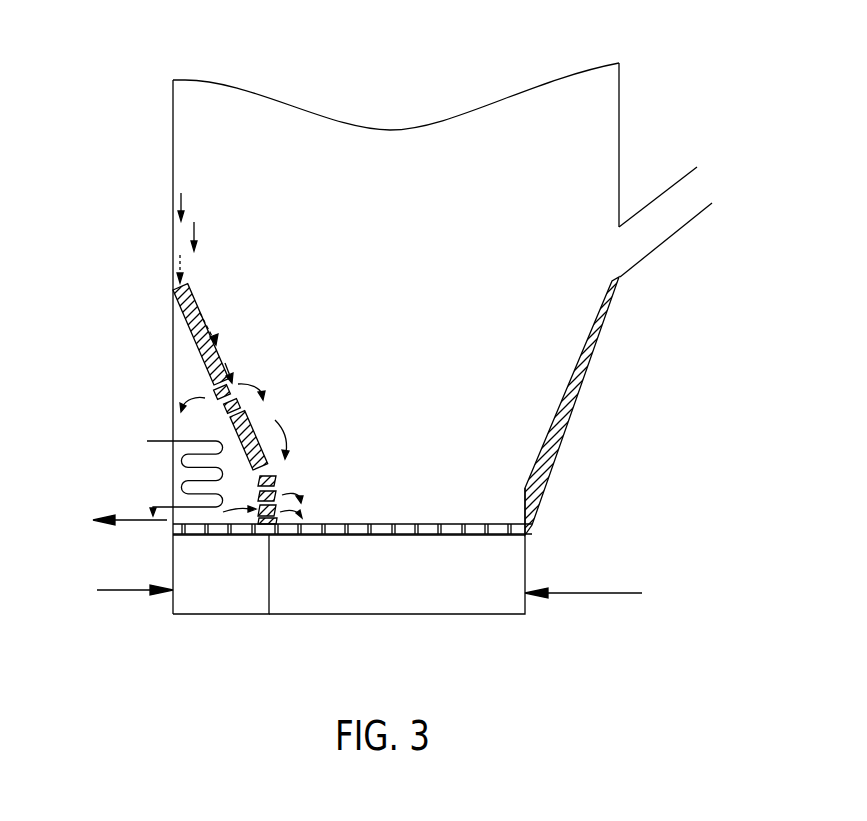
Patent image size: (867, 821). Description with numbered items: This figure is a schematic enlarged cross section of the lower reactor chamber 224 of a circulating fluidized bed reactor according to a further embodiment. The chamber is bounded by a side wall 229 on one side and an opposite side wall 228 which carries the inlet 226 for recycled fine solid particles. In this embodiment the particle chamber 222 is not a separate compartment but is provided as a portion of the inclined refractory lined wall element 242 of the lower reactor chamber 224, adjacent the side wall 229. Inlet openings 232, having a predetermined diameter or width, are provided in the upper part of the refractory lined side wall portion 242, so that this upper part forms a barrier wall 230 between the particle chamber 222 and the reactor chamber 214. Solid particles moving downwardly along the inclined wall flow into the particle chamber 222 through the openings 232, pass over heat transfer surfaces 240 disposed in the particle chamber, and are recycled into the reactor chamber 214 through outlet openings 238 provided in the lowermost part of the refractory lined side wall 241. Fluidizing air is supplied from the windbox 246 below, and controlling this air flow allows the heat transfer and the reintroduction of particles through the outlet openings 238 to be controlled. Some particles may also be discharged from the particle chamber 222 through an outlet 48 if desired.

The lower reactor chamber 224 is at (416, 92).
The side wall 228 is at (620, 110).
The side wall 229 is at (173, 147).
The inlet 226 is at (622, 250).
The particle chamber 222 is at (168, 407).
The inlet openings 232 is at (232, 386).
The barrier wall 230 is at (240, 390).
The outlet openings 238 is at (280, 489).
The inclined refractory lined wall element 242 is at (212, 336).
The heat transfer surfaces 240 is at (172, 463).
The refractory lined side wall 241 is at (237, 500).
The outlet 48 is at (140, 522).
The windbox 246 is at (242, 591).
The reactor chamber 214 is at (393, 591).